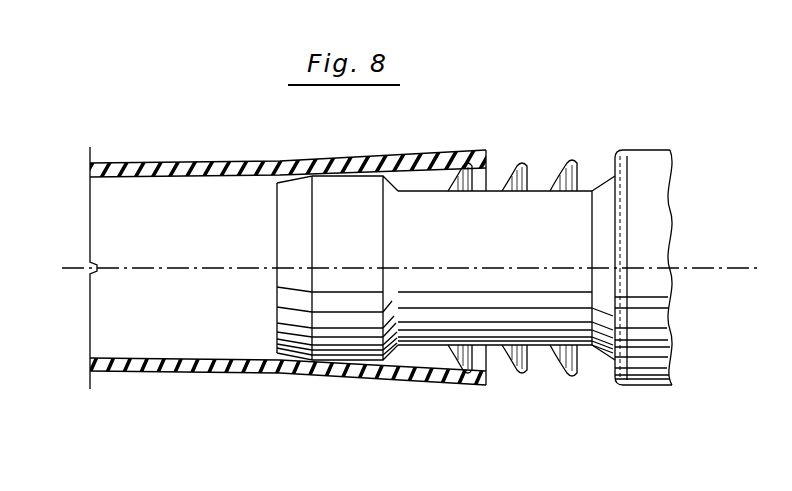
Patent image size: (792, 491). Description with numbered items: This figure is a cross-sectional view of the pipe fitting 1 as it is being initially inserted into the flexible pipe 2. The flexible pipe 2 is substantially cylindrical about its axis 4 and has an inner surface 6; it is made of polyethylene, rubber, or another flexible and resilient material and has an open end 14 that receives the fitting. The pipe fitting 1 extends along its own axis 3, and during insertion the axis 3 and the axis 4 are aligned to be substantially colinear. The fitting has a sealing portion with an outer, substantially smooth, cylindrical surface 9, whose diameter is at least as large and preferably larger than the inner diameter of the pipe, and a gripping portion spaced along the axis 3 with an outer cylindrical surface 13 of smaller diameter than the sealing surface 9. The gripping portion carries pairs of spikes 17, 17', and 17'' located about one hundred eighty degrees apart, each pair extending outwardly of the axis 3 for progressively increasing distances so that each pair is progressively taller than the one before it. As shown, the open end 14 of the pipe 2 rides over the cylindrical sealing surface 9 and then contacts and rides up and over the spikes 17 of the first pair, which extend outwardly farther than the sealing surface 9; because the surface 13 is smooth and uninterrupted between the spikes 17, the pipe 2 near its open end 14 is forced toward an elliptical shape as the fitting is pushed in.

The pipe fitting 1 is at (502, 226).
The flexible pipe 2 is at (285, 230).
The axis 3 is at (738, 268).
The axis 4 is at (230, 270).
The inner surface 6 is at (189, 178).
The outer cylindrical surface 9 is at (351, 240).
The outer cylindrical surface 13 is at (506, 252).
The open end 14 is at (411, 150).
The spikes 17 is at (492, 247).
The spikes 17' is at (541, 247).
The spikes 17'' is at (589, 248).